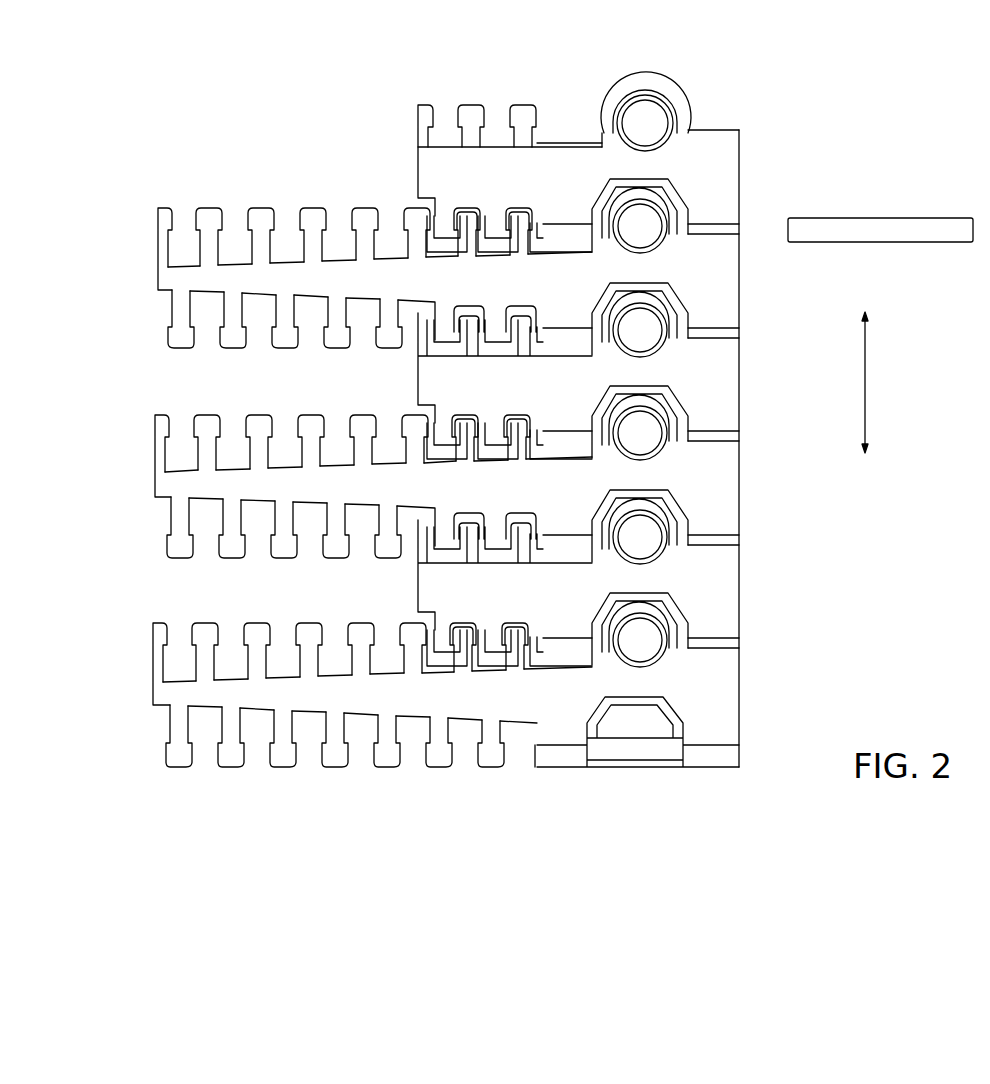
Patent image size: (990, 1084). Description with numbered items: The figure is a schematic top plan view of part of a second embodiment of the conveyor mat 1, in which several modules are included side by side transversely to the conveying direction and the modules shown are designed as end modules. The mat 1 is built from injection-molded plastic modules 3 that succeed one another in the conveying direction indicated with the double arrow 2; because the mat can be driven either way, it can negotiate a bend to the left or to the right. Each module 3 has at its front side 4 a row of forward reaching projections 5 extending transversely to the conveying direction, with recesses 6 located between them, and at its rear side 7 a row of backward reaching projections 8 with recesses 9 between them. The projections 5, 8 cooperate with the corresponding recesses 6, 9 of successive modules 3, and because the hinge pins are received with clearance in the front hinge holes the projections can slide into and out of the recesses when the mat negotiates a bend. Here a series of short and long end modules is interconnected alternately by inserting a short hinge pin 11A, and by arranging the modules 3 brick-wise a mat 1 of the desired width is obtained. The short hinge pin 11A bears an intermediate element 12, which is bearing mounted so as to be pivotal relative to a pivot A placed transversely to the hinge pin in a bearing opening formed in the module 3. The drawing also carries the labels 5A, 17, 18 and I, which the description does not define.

The modular conveyor belt 1 is at (486, 399).
The direction of travel 2 is at (865, 415).
The belt module 3 is at (718, 308).
The row of projections 4 is at (364, 160).
The projection 5 is at (297, 206).
The end projection / hinge hood 5A is at (638, 80).
The upper row of projections 6 is at (344, 251).
The recess between projections 7 is at (259, 343).
The hanging projection 8 is at (284, 342).
The lower row of projections 9 is at (321, 321).
The hinge pin 11A is at (882, 218).
The hinge eye opening 12 is at (645, 120).
The module body 17 is at (721, 297).
The side edge of belt 18 is at (739, 485).
The hinge axis A is at (645, 217).
The intermediate module section I is at (474, 494).